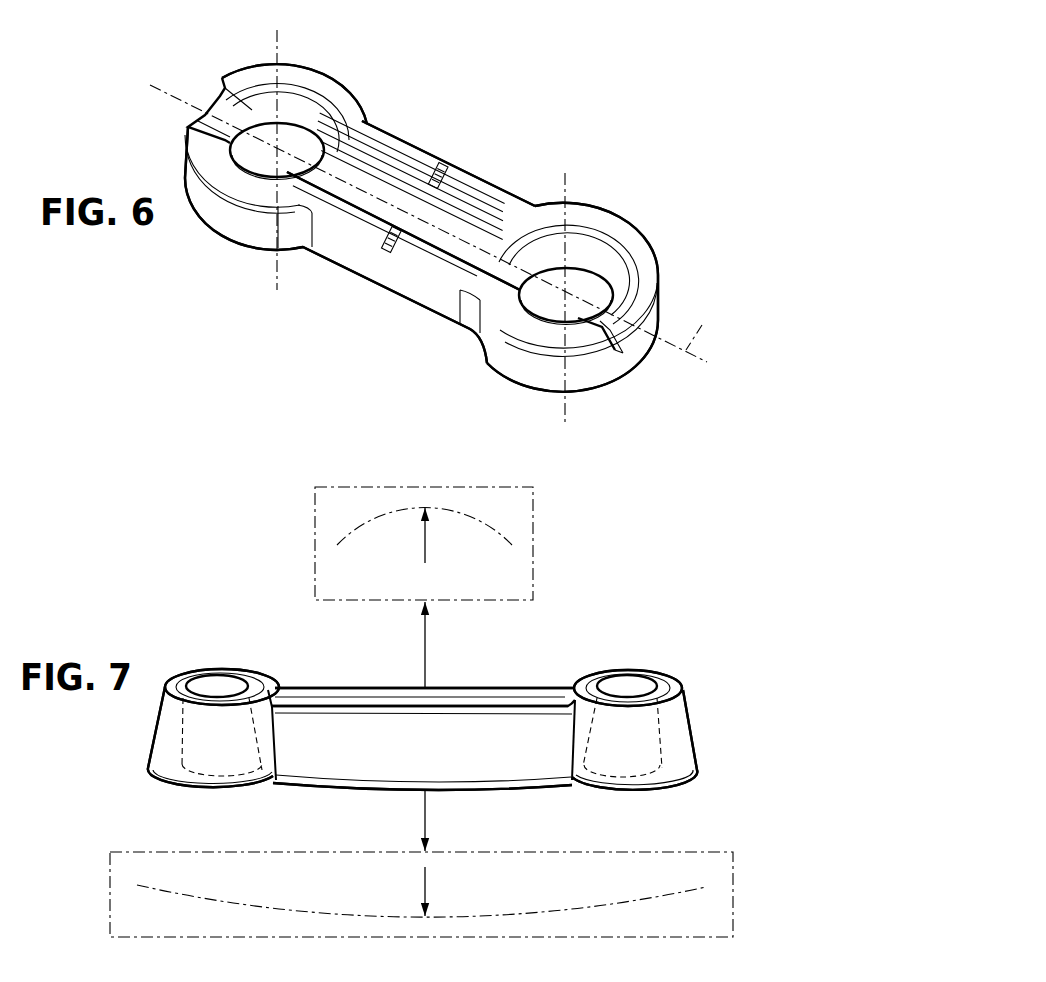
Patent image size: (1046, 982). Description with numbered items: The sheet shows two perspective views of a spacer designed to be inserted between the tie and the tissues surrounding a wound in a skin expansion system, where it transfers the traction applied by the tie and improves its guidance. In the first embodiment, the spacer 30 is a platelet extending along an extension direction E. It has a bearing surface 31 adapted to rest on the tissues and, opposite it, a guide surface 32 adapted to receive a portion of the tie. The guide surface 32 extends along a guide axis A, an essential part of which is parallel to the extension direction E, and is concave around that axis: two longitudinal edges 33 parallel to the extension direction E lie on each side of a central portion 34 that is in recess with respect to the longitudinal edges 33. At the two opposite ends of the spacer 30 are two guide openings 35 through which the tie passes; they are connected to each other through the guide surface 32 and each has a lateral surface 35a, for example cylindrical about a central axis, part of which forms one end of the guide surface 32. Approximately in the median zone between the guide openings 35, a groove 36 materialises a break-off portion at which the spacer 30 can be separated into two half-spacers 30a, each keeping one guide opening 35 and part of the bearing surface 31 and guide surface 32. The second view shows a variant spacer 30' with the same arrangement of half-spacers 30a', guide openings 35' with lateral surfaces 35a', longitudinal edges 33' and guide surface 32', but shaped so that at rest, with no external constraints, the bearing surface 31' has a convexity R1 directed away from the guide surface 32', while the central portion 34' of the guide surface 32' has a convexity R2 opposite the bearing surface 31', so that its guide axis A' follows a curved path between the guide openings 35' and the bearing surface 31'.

In FIG. 6, the spacer 30 is at (421, 222).
In FIG. 6, the half-spacer 30a is at (414, 256).
In FIG. 6, the bearing surface 31 is at (395, 305).
In FIG. 6, the guide surface 32 is at (410, 151).
In FIG. 6, the longitudinal edges 33 is at (414, 240).
In FIG. 6, the central portion 34 is at (401, 244).
In FIG. 6, the guide openings 35 is at (442, 170).
In FIG. 6, the lateral surface 35a is at (432, 166).
In FIG. 6, the groove 36 is at (436, 170).
In FIG. 6, the guide axis A is at (428, 223).
In FIG. 6, the extension direction E is at (701, 325).
In FIG. 7, the spacer 30' is at (422, 662).
In FIG. 7, the half-spacer 30a' is at (423, 755).
In FIG. 7, the bearing surface 31' is at (422, 813).
In FIG. 7, the guide surface 32' is at (420, 655).
In FIG. 7, the longitudinal edges 33' is at (426, 669).
In FIG. 7, the central portion 34' is at (423, 660).
In FIG. 7, the guide openings 35' is at (423, 650).
In FIG. 7, the lateral surface 35a' is at (423, 647).
In FIG. 7, the guide axis A' is at (424, 518).
In FIG. 7, the convexity of the bearing surface R1 is at (421, 863).
In FIG. 7, the convexity of the central portion R2 is at (441, 598).